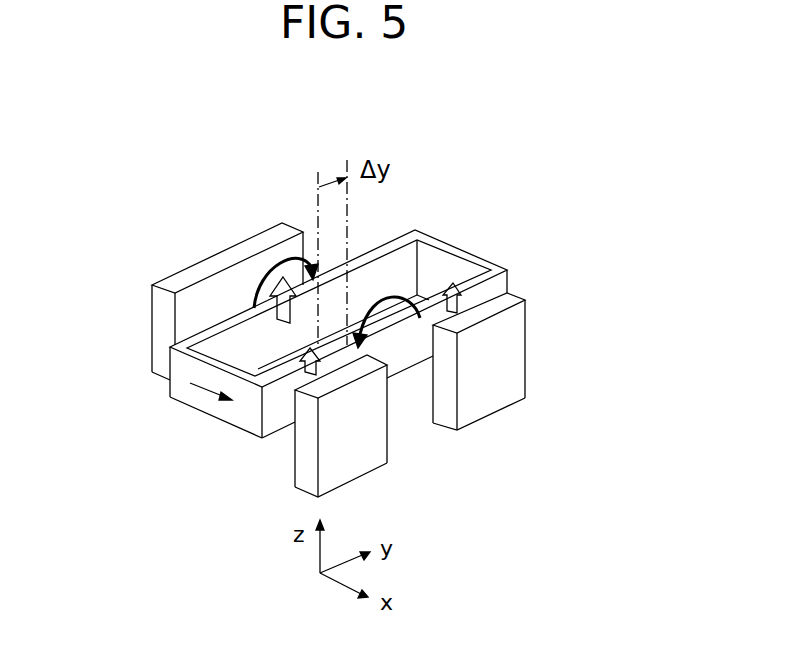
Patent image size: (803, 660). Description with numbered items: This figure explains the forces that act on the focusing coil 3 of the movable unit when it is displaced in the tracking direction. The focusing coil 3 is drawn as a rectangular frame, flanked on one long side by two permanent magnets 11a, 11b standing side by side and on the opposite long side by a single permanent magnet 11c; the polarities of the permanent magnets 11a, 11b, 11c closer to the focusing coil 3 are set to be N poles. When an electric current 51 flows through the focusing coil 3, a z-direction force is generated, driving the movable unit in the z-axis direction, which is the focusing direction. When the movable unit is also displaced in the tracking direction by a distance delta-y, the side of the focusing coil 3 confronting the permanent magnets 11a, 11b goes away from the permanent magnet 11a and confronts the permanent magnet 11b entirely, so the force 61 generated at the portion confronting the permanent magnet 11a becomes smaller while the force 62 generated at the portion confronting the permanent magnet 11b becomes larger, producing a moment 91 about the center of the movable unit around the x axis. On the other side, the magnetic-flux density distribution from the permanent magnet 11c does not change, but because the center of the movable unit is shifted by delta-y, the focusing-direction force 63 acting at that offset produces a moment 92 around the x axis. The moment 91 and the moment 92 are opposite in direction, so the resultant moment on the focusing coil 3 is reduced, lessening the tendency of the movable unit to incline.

The focusing coil 3 is at (202, 405).
The electric current 51 is at (200, 390).
The force 61 is at (300, 375).
The force 62 is at (473, 292).
The force 63 is at (276, 318).
The moment 91 is at (395, 292).
The moment 92 is at (288, 255).
The permanent magnet 11a is at (377, 453).
The permanent magnet 11b is at (513, 373).
The permanent magnet 11c is at (185, 267).